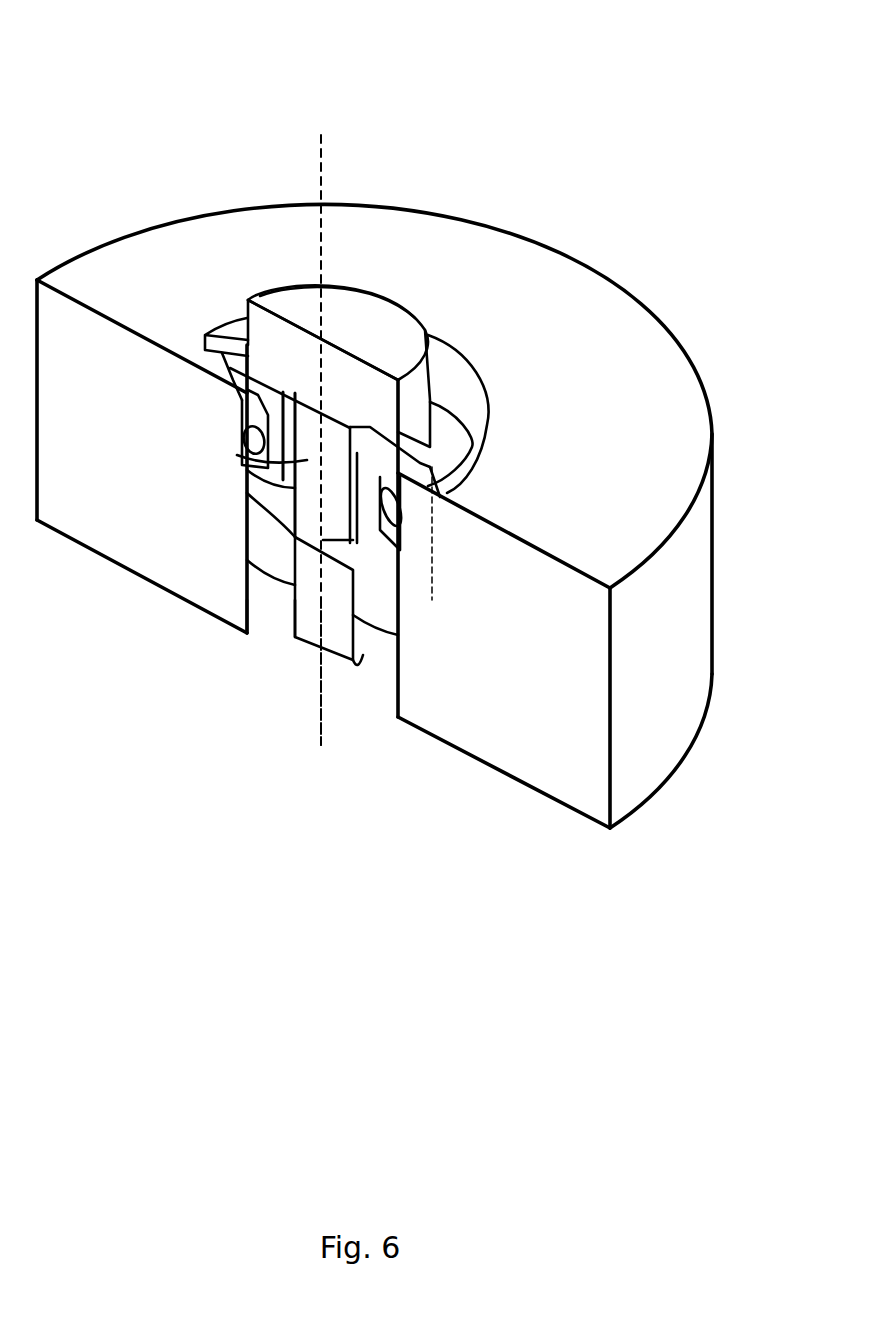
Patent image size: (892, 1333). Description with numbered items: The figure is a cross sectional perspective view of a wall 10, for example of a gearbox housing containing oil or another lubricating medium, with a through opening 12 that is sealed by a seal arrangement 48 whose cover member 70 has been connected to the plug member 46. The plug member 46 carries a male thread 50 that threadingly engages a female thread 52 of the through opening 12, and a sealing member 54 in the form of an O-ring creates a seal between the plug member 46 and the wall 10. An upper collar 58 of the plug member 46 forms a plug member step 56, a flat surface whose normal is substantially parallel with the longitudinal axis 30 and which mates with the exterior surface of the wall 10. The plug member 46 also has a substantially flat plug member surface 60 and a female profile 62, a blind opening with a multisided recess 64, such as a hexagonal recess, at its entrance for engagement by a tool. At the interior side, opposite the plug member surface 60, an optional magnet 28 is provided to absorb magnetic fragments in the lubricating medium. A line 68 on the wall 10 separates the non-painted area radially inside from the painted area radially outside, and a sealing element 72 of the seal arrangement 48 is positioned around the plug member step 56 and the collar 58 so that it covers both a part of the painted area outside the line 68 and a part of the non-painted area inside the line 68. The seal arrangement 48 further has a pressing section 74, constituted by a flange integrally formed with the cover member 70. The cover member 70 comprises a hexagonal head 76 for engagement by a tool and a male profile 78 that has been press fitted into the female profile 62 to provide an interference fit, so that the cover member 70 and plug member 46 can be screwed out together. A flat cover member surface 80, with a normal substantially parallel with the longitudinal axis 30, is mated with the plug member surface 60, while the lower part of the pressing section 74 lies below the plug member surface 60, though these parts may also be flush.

The wall 10 is at (165, 243).
The through opening 12 is at (273, 603).
The magnet 28 is at (333, 628).
The longitudinal axis 30 is at (323, 724).
The plug member 46 is at (378, 606).
The seal arrangement 48 is at (213, 95).
The male thread 50 is at (265, 530).
The female thread 52 is at (245, 604).
The sealing member 54 is at (244, 441).
The plug member step 56 is at (245, 396).
The collar 58 is at (235, 380).
The plug member surface 60 is at (270, 378).
The female profile 62 is at (300, 492).
The multisided recess 64 is at (358, 436).
The line 68 is at (433, 558).
The cover member 70 is at (285, 296).
The sealing element 72 is at (190, 360).
The pressing section 74 is at (204, 352).
The head 76 is at (392, 322).
The male profile 78 is at (305, 464).
The cover member surface 80 is at (250, 368).